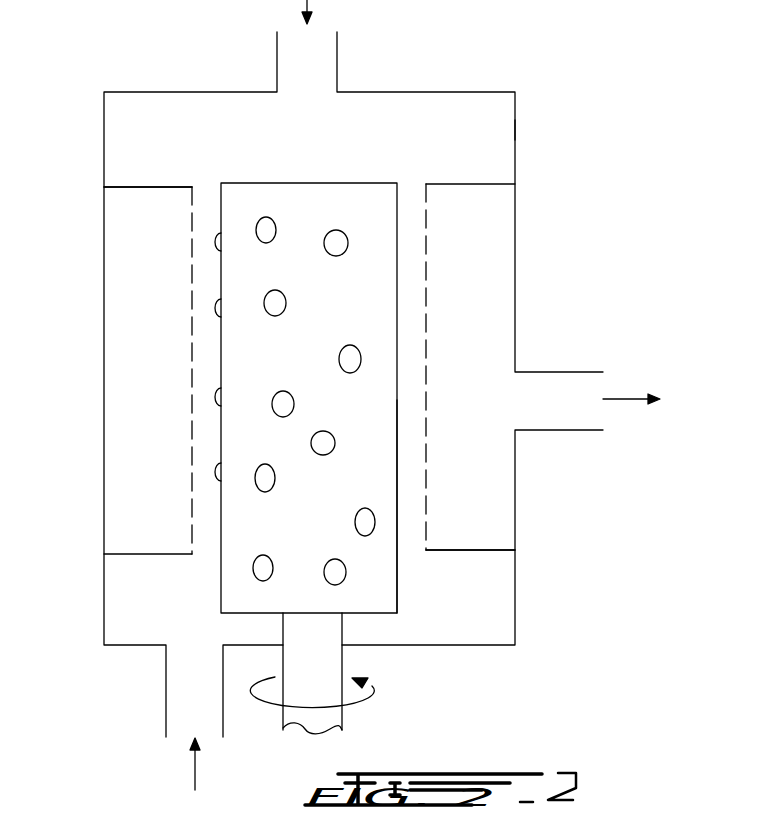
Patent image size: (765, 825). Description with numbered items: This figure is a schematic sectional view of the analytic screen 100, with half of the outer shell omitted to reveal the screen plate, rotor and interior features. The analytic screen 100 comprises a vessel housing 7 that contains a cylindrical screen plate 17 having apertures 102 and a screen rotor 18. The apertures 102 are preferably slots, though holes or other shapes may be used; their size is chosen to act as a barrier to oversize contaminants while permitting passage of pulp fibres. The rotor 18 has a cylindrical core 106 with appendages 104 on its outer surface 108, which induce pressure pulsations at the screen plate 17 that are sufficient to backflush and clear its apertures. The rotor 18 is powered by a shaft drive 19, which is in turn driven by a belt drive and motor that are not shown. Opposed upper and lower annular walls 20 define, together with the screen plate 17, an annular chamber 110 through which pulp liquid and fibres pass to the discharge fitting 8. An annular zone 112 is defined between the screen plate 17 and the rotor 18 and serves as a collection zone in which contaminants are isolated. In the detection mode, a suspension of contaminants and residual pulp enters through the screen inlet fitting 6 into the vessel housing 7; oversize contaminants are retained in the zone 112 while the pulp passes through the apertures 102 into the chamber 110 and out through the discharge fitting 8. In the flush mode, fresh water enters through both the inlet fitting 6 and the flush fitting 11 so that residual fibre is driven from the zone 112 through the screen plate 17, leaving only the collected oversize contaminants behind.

The screen inlet fitting 6 is at (338, 62).
The vessel housing 7 is at (515, 168).
The discharge fitting 8 is at (540, 430).
The flush fitting 11 is at (163, 680).
The cylindrical screen plate 17 is at (427, 230).
The screen rotor 18 is at (404, 278).
The shaft drive 19 is at (343, 715).
The annular walls 20 is at (145, 187).
The analytic screen 100 is at (537, 142).
The apertures 102 is at (192, 368).
The appendages 104 is at (338, 238).
The cylindrical core 106 is at (397, 380).
The outer surface 108 is at (337, 356).
The annular chamber 110 is at (487, 500).
The annular zone 112 is at (417, 522).